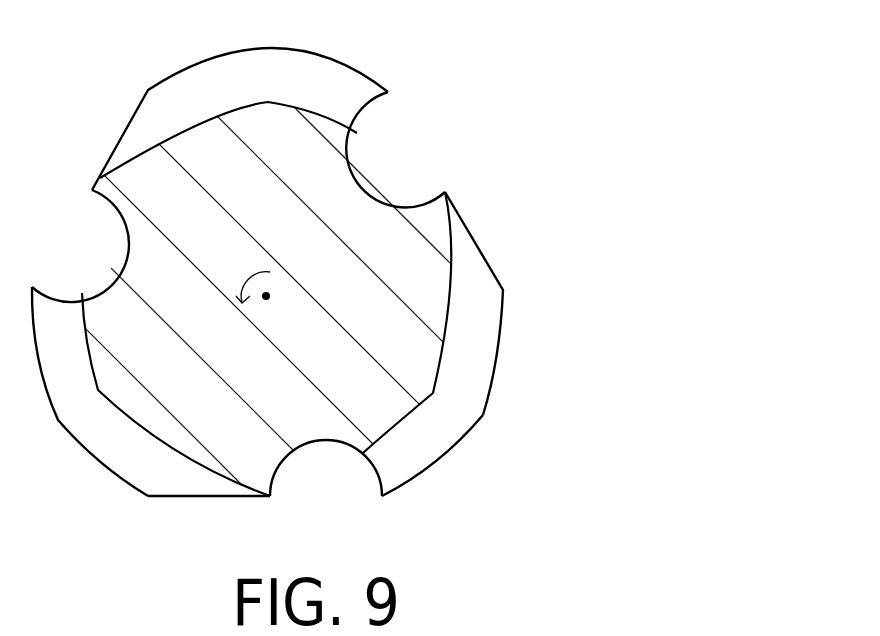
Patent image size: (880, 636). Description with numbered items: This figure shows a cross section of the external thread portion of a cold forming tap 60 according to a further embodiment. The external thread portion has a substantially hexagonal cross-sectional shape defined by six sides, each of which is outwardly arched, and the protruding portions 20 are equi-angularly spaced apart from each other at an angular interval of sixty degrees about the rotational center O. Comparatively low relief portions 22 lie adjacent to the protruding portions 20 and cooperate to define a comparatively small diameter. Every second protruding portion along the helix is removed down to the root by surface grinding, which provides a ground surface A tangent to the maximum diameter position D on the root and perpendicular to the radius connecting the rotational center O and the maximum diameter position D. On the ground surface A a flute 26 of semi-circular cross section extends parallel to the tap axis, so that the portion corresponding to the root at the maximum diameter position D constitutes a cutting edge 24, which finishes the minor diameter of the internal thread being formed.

The cold forming tap 60 is at (495, 107).
The protruding portion 20 is at (487, 422).
The relief portion 22 is at (432, 470).
The cutting edge 24 is at (271, 497).
The flute 26 is at (337, 443).
The ground surface A is at (182, 498).
The maximum diameter position D is at (92, 190).
The rotational center O is at (264, 297).